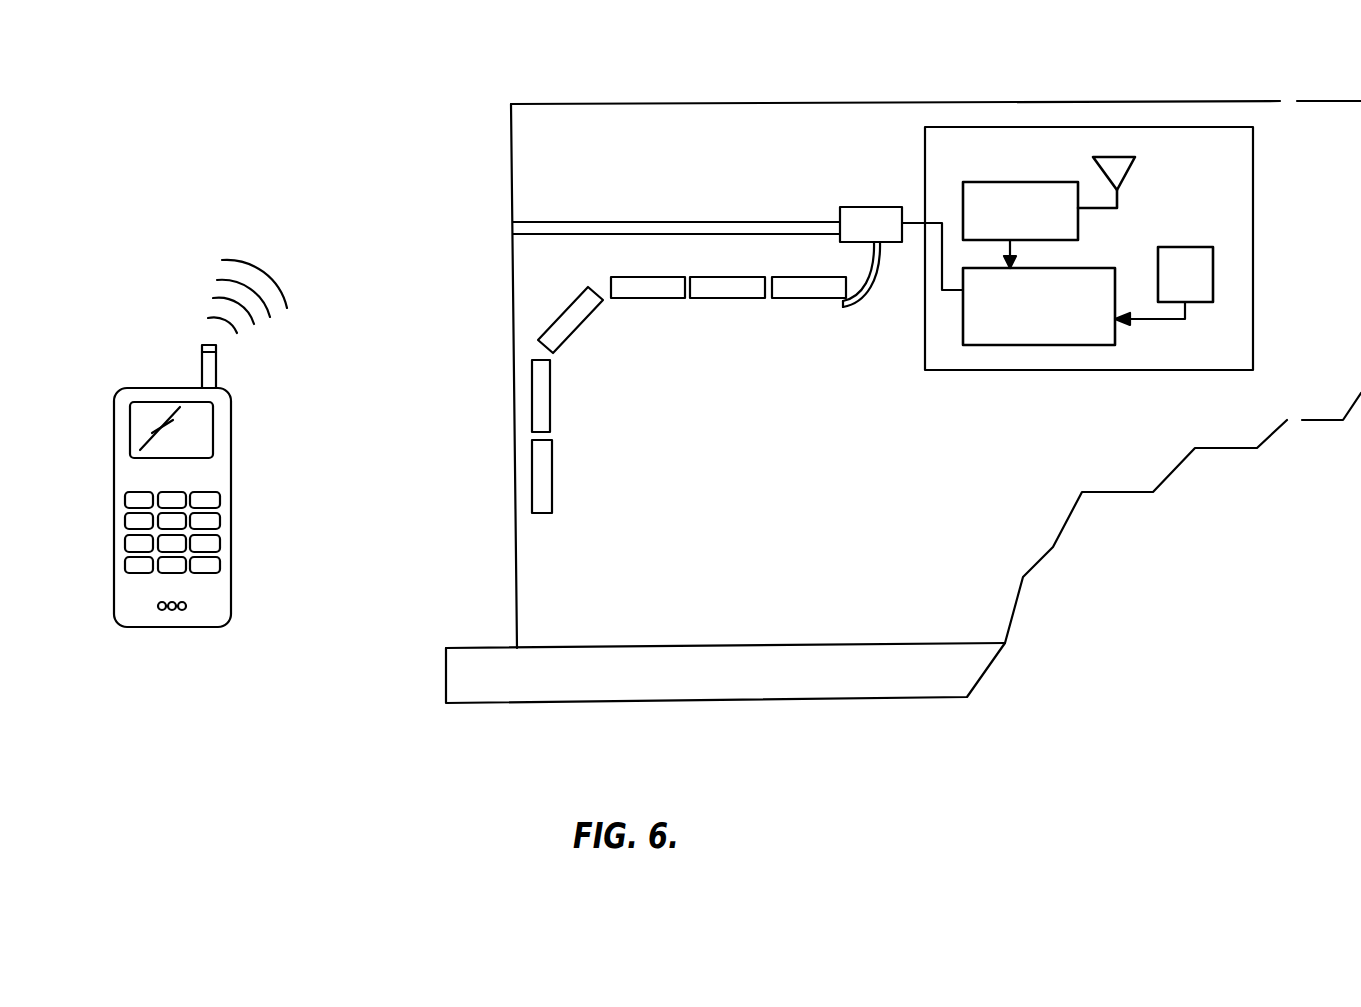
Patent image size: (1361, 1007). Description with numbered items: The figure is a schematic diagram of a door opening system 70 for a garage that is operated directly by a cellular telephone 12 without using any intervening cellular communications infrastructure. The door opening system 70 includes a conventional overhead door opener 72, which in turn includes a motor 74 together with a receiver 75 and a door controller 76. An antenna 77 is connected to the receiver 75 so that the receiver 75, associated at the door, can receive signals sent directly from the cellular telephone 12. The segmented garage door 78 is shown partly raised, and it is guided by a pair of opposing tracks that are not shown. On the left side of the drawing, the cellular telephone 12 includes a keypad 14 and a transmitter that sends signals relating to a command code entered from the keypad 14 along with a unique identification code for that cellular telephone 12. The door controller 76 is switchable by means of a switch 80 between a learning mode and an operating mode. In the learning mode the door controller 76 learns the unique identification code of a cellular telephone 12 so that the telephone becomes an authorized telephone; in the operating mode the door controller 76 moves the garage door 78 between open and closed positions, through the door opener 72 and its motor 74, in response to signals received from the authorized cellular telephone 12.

The cellular telephone 12 is at (108, 409).
The keypad 14 is at (125, 500).
The door opening system 70 is at (474, 125).
The overhead door opener 72 is at (1253, 185).
The motor 74 is at (880, 207).
The receiver 75 is at (1078, 222).
The door controller 76 is at (1115, 335).
The antenna 77 is at (1127, 170).
The segmented garage door 78 is at (540, 294).
The switch 80 is at (1213, 272).